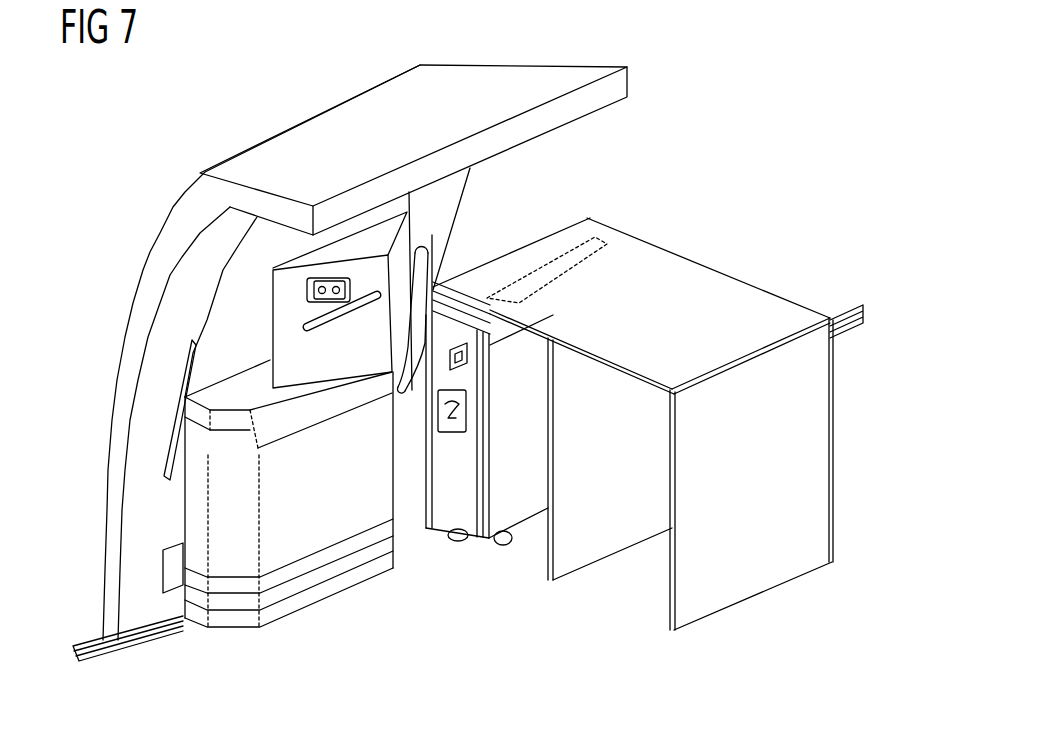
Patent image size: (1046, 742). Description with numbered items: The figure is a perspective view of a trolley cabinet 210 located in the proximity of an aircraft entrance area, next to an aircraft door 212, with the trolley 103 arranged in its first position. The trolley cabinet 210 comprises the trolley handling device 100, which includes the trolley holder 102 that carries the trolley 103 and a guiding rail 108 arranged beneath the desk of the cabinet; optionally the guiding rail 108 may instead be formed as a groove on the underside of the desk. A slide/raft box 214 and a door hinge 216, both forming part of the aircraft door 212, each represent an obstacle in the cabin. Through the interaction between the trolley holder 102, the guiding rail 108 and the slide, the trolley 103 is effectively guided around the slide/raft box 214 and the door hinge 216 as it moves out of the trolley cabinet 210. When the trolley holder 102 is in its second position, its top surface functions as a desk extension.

The trolley handling device 100 is at (520, 260).
The trolley holder 102 is at (506, 338).
The trolley 103 is at (538, 417).
The guiding rail 108 is at (567, 258).
The trolley cabinet 210 is at (718, 182).
The aircraft door 212 is at (150, 377).
The slide/raft box 214 is at (303, 548).
The door hinge 216 is at (273, 320).